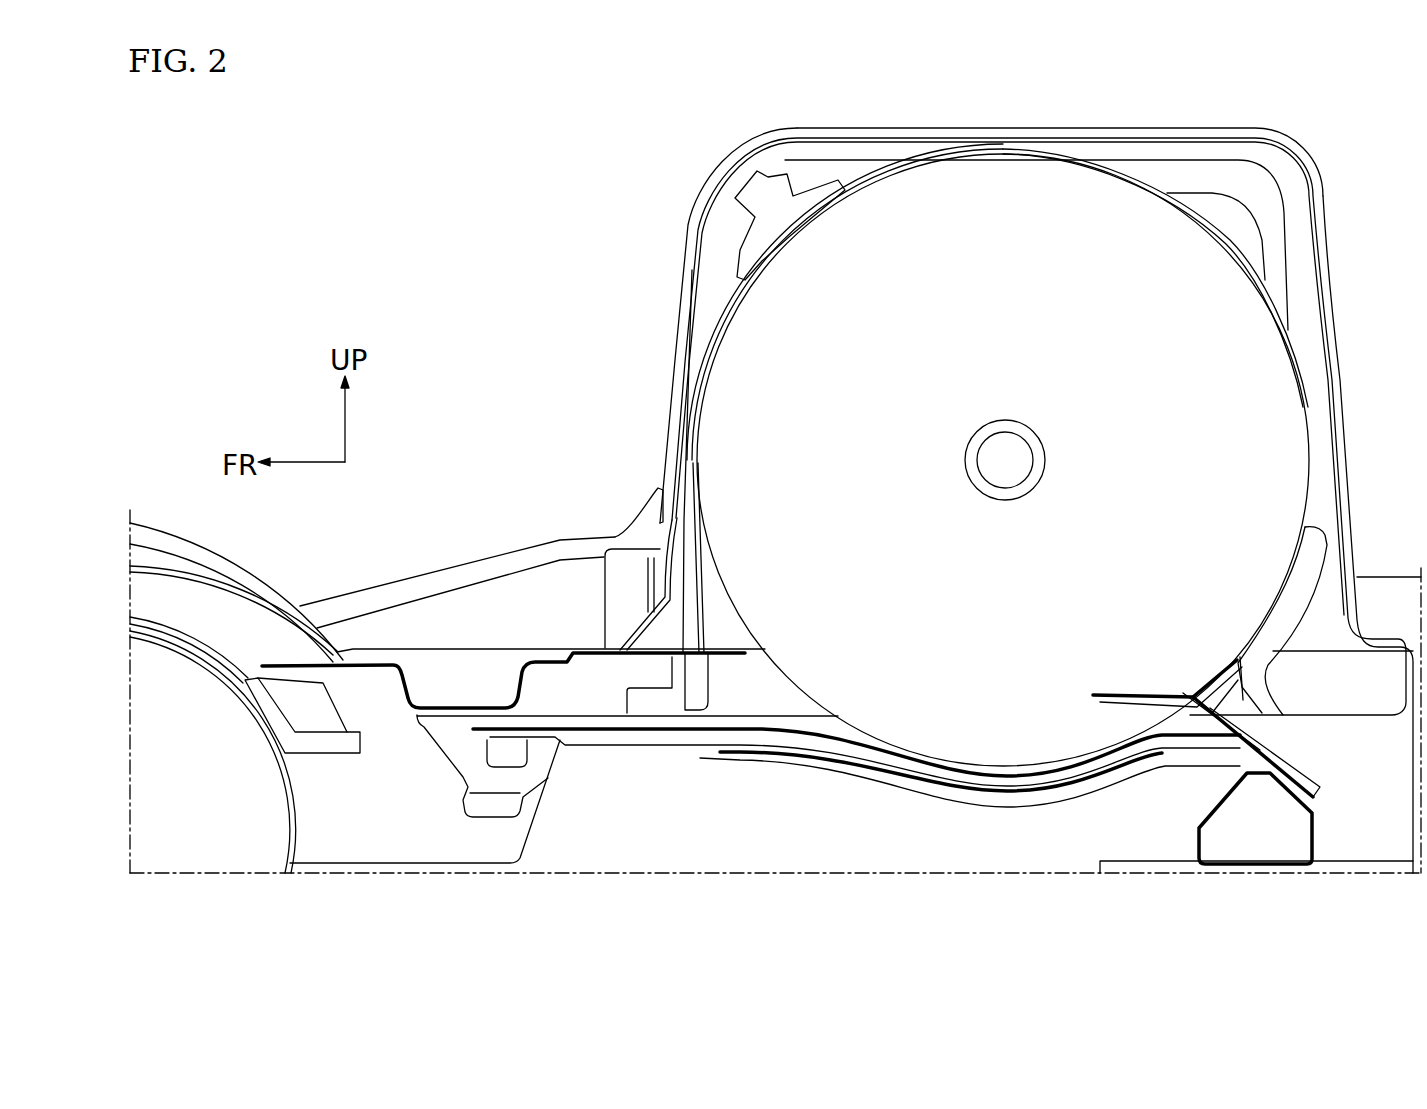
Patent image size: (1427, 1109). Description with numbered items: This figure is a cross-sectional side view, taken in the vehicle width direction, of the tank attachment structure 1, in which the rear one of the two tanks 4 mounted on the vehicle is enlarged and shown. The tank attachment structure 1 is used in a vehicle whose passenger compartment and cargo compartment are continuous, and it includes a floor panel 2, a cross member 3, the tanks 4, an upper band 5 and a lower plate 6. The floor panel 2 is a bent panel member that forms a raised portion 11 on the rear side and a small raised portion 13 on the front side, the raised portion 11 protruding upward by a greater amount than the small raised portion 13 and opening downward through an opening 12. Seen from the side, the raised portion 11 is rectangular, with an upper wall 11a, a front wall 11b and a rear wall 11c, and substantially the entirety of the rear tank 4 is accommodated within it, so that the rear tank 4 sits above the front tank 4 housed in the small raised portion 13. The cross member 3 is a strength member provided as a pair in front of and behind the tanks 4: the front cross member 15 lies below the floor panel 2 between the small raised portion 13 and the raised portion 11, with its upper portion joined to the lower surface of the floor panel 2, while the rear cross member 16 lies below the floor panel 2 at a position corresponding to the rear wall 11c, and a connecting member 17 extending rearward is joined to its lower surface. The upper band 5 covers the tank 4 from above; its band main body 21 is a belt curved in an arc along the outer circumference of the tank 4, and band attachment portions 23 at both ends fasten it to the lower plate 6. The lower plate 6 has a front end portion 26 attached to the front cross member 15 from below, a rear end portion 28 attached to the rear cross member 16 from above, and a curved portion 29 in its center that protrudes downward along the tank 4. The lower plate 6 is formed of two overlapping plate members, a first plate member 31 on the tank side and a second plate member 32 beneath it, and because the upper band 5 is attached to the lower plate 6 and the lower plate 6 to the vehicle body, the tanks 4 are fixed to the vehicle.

The tank attachment structure 1 is at (1340, 144).
The floor panel 2 is at (510, 640).
The cross member 3 is at (807, 727).
The tank 4 is at (1292, 334).
The upper band 5 is at (1252, 252).
The lower plate 6 is at (973, 822).
The raised portion 11 is at (1180, 128).
The upper wall 11a is at (1018, 128).
The front wall 11b is at (672, 353).
The rear wall 11c is at (1346, 378).
The opening 12 is at (1187, 712).
The small raised portion 13 is at (150, 523).
The front cross member 15 is at (410, 680).
The rear cross member 16 is at (1275, 866).
The connecting member 17 is at (1395, 850).
The band main body 21 is at (717, 333).
The band attachment portion 23 is at (683, 703).
The front end portion 26 is at (571, 735).
The rear end portion 28 is at (1267, 777).
The curved portion 29 is at (1014, 802).
The first plate member 31 is at (874, 745).
The second plate member 32 is at (911, 795).